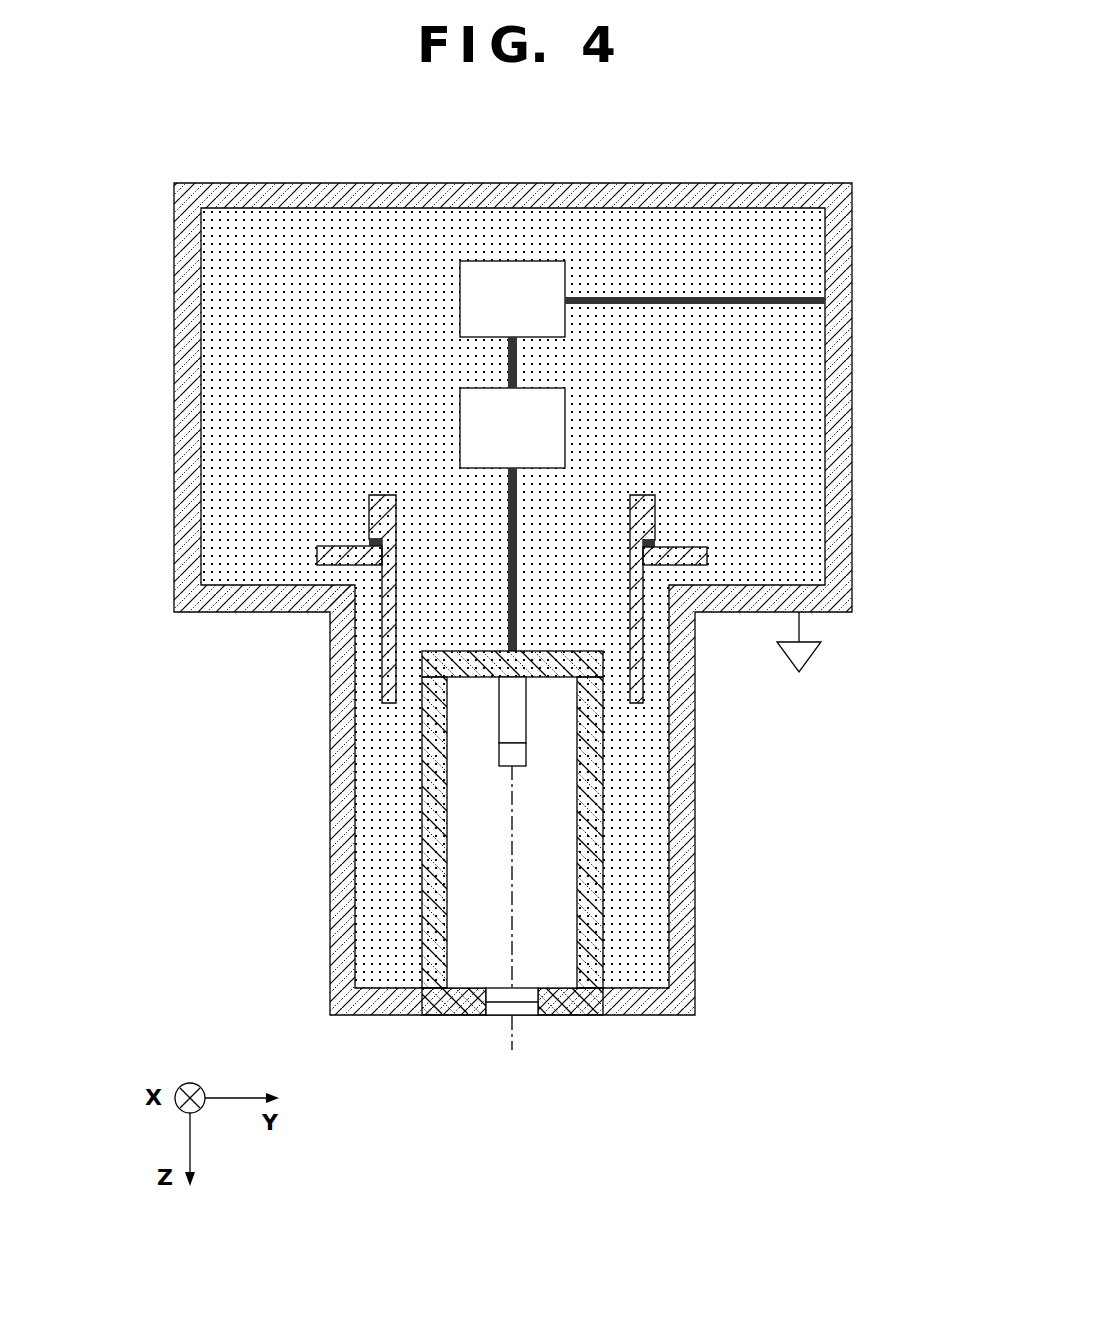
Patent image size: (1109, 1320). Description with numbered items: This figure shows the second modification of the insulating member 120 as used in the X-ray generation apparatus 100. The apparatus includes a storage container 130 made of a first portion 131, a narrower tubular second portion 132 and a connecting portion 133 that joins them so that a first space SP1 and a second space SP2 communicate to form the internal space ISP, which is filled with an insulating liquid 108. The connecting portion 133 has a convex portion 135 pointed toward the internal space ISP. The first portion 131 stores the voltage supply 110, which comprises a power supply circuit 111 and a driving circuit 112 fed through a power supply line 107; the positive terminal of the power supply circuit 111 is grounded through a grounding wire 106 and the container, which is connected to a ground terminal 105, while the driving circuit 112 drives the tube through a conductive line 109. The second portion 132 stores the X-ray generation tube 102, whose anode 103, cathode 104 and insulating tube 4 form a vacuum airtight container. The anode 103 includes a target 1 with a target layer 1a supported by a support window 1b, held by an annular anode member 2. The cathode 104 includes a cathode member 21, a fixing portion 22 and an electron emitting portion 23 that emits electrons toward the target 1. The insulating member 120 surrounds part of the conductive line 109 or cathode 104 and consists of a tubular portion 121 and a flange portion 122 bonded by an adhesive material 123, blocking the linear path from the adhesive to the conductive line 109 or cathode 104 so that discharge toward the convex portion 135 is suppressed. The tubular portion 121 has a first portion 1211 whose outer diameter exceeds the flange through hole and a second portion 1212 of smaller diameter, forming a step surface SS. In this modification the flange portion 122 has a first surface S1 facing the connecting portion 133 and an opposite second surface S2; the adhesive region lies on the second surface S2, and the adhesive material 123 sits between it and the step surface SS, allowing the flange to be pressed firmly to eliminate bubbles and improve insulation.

The X-ray generation apparatus 100 is at (734, 1140).
The X-ray generation tube 102 is at (624, 897).
The anode 103 is at (512, 1093).
The cathode 104 is at (644, 736).
The ground terminal 105 is at (835, 660).
The grounding wire 106 is at (765, 297).
The power supply line 107 is at (523, 368).
The insulating liquid 108 is at (225, 393).
The conductive line 109 is at (528, 503).
The voltage supply 110 is at (450, 280).
The power supply circuit 111 is at (500, 290).
The driving circuit 112 is at (487, 405).
The insulating member 120 is at (306, 562).
The tubular portion 121 is at (385, 667).
The first portion 1211 is at (655, 512).
The second portion 1212 is at (655, 543).
The flange portion 122 is at (325, 539).
The adhesive material 123 is at (367, 538).
The storage container 130 is at (278, 831).
The first portion 131 is at (176, 577).
The second portion 132 is at (340, 905).
The connecting portion 133 is at (220, 612).
The convex portion 135 is at (348, 592).
The target 1 is at (510, 1066).
The target layer 1a is at (490, 1016).
The support window 1b is at (527, 1016).
The anode member 2 is at (449, 1016).
The insulating tube 4 is at (590, 832).
The cathode member 21 is at (590, 658).
The fixing portion 22 is at (517, 712).
The electron emitting portion 23 is at (517, 755).
The first surface S1 is at (326, 575).
The second surface S2 is at (320, 532).
The step surface SS is at (379, 518).
The first space SP1 is at (697, 423).
The second space SP2 is at (408, 803).
The internal space ISP is at (867, 1088).